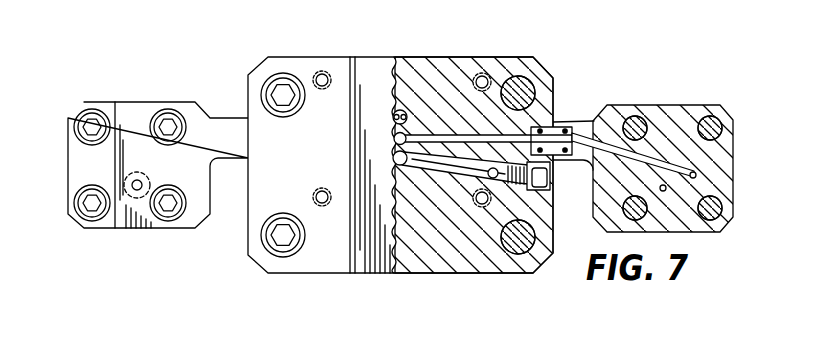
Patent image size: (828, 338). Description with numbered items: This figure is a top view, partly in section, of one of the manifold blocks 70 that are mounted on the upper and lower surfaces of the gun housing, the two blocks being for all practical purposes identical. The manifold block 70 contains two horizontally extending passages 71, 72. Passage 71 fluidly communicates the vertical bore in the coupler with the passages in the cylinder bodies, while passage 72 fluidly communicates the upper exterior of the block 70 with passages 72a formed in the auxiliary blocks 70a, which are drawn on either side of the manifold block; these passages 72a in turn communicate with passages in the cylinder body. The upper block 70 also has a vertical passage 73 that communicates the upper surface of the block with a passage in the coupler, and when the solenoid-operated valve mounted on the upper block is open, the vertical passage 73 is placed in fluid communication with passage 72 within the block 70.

The manifold block 70 is at (397, 38).
The auxiliary block 70a is at (158, 75).
The passage 71 is at (403, 177).
The passage 72 is at (463, 135).
The passage 72a is at (597, 125).
The vertical passage 73 is at (398, 110).